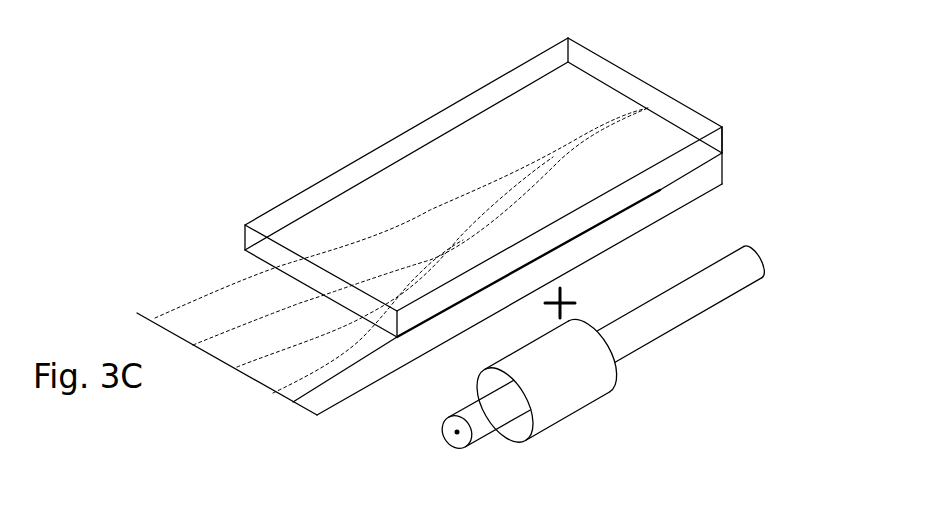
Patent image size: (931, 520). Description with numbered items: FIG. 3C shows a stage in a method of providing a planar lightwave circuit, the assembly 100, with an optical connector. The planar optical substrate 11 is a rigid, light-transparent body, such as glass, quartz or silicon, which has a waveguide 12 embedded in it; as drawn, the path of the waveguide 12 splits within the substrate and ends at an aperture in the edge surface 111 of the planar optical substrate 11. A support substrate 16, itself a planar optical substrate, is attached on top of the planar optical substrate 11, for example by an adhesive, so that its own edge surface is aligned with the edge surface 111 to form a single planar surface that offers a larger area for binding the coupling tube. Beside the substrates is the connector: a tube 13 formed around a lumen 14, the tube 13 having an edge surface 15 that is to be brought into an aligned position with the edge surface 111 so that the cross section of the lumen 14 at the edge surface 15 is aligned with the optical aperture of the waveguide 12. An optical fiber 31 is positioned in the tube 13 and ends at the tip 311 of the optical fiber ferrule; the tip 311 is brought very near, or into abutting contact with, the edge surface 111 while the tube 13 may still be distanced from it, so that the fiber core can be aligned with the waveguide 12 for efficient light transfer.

The backlight module 100 is at (691, 85).
The support substrate 16 is at (568, 116).
The edge surface 111 is at (723, 152).
The planar optical substrate 11 is at (295, 331).
The waveguide 12 is at (493, 180).
The optical fiber 31 is at (683, 297).
The tube 13 is at (580, 395).
The lumen 14 is at (540, 395).
The edge surface 15 is at (515, 425).
The tip 311 is at (457, 432).